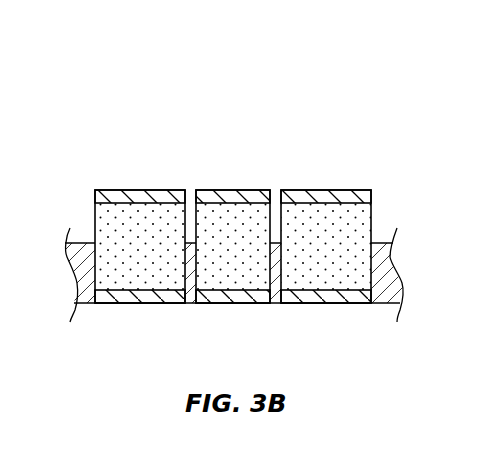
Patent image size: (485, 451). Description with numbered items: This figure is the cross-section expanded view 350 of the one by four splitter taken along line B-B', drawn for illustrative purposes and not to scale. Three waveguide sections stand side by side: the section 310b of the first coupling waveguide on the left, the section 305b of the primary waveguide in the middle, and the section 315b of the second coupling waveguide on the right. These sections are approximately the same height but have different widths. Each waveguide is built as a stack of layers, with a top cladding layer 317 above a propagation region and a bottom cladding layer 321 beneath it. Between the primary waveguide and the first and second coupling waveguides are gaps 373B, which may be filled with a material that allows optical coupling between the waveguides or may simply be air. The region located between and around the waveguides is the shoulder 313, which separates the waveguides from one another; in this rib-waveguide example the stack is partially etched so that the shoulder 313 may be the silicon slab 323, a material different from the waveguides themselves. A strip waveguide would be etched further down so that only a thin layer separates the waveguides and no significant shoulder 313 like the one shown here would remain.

The cross-section expanded view 350 is at (99, 61).
The shoulder 313 is at (384, 228).
The silicon slab 323 is at (399, 263).
The section of the first coupling waveguide 310b is at (93, 208).
The section of the primary waveguide 305b is at (228, 190).
The section of the second coupling waveguide 315b is at (320, 190).
The top cladding layer 317 is at (133, 190).
The bottom cladding layer 321 is at (230, 303).
The gaps 373B is at (188, 185).